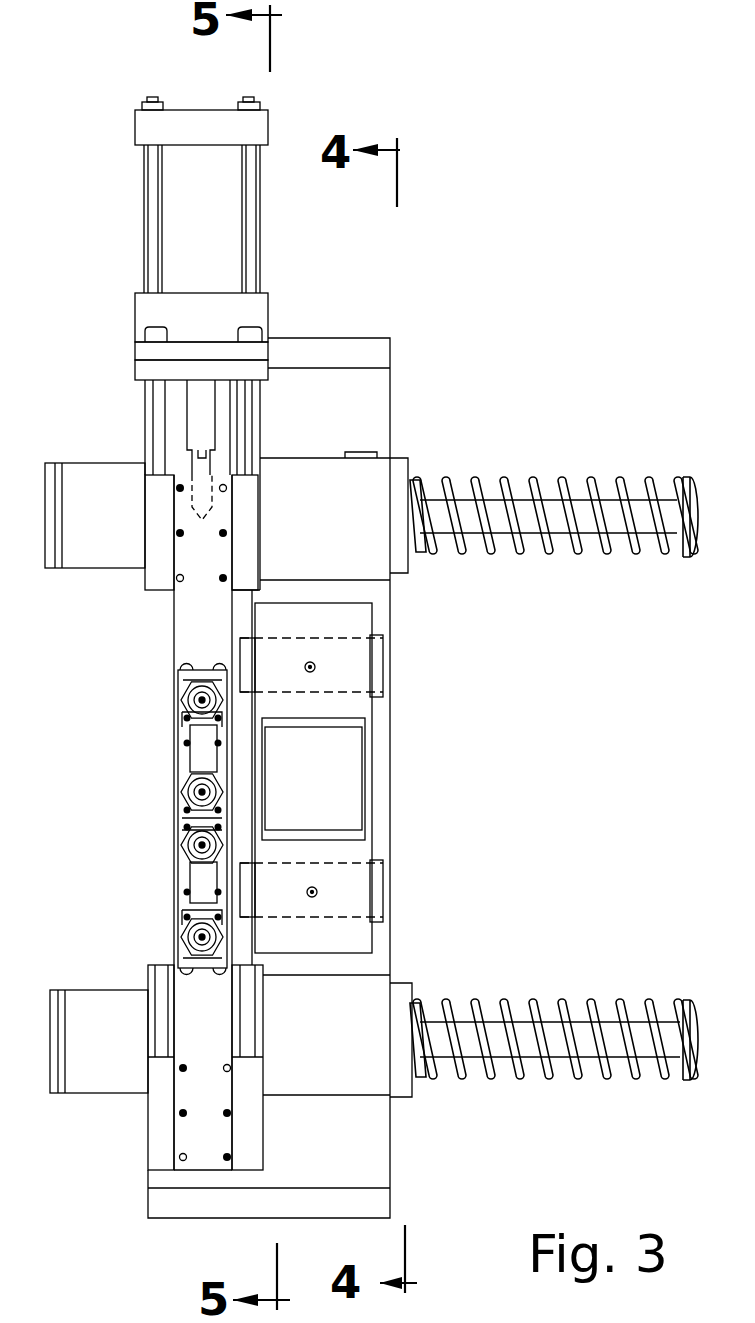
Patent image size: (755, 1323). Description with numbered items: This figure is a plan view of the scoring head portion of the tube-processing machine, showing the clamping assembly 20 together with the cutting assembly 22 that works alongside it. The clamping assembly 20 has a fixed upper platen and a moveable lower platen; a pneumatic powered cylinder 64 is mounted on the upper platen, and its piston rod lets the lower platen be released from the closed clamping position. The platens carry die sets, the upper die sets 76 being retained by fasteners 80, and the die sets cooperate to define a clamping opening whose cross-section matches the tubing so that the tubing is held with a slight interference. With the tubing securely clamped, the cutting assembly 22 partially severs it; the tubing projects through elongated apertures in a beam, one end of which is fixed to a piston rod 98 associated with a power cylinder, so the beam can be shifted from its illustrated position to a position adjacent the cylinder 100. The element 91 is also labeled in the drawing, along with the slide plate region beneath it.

The clamping assembly 20 is at (329, 325).
The cutting assembly 22 is at (115, 1205).
The pneumatic powered cylinder 64 is at (353, 773).
The upper die sets 76 is at (357, 652).
The fasteners 80 is at (310, 662).
The slide plate 91 is at (205, 1152).
The piston rod 98 is at (198, 410).
The cylinder 100 is at (177, 217).